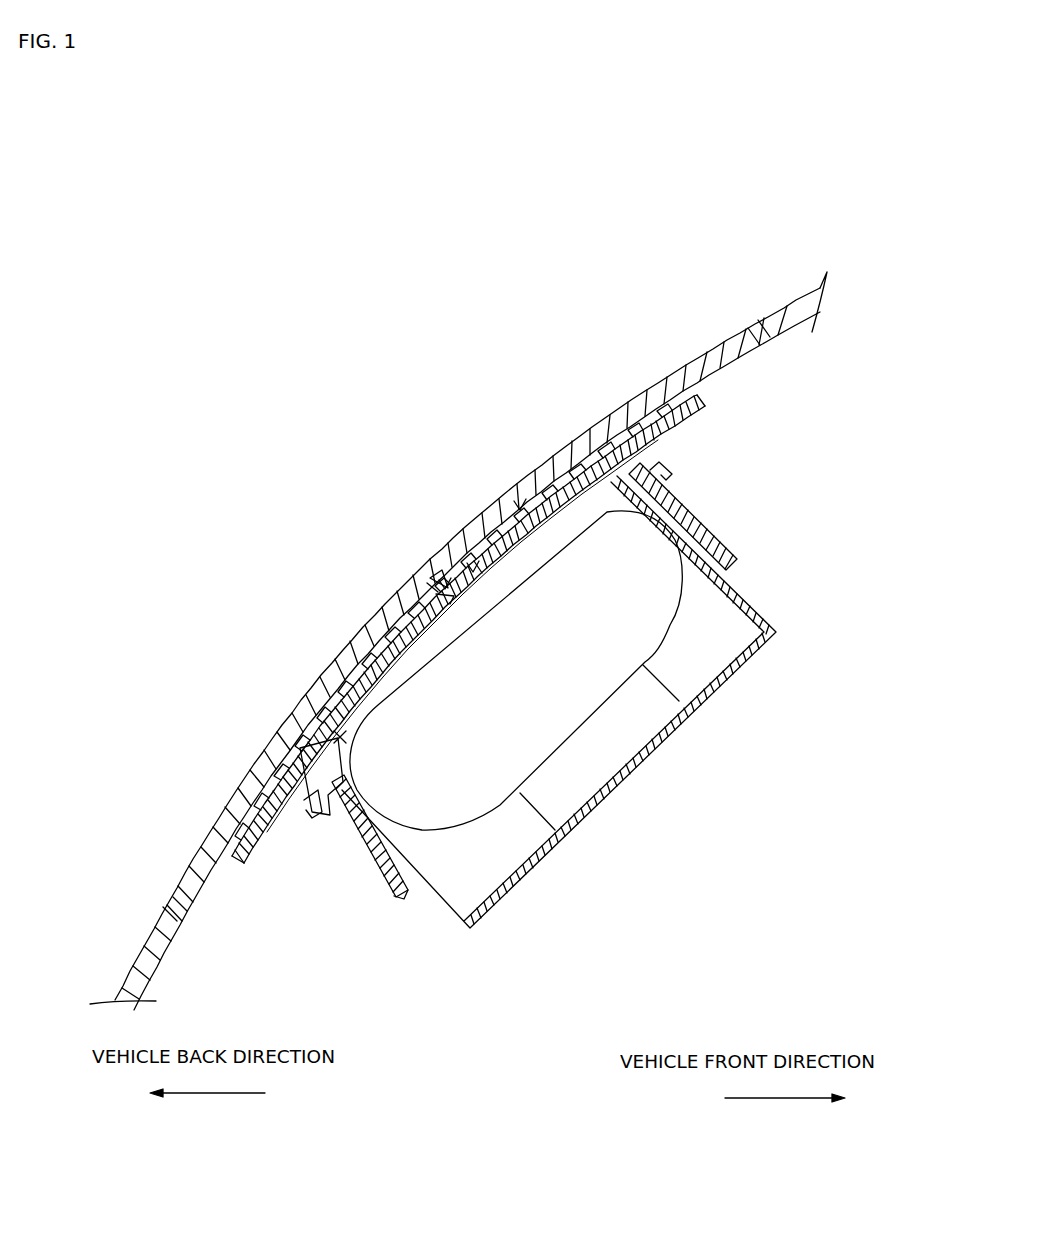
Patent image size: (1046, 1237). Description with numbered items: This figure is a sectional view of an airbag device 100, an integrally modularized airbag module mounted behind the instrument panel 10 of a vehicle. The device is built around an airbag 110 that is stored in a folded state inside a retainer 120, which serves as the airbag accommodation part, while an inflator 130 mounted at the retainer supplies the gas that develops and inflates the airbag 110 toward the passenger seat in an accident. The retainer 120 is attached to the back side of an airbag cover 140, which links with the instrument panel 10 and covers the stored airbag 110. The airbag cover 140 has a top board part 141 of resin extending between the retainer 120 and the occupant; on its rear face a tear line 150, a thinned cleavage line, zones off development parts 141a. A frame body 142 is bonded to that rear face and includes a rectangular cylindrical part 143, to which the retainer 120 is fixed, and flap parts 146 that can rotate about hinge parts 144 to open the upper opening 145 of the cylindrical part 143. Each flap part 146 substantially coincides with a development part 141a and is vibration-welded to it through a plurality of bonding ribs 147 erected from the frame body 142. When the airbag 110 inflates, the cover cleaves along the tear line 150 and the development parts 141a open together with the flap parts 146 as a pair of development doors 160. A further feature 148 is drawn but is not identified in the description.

The instrument panel 10 is at (130, 960).
The airbag device 100 is at (403, 292).
The airbag 110 is at (492, 814).
The retainer 120 is at (747, 597).
The inflator 130 is at (633, 730).
The airbag cover 140 is at (285, 525).
The top board part 141 is at (232, 787).
The development part 141a is at (357, 650).
The frame body 142 is at (700, 523).
The cylindrical part 143 is at (392, 888).
The hinge part 144 is at (307, 790).
The upper opening 145 is at (343, 748).
The flap part 146 is at (340, 703).
The bonding rib 147 is at (445, 582).
The groove 148 is at (440, 600).
The tear line 150 is at (443, 582).
The development door 160 is at (246, 672).